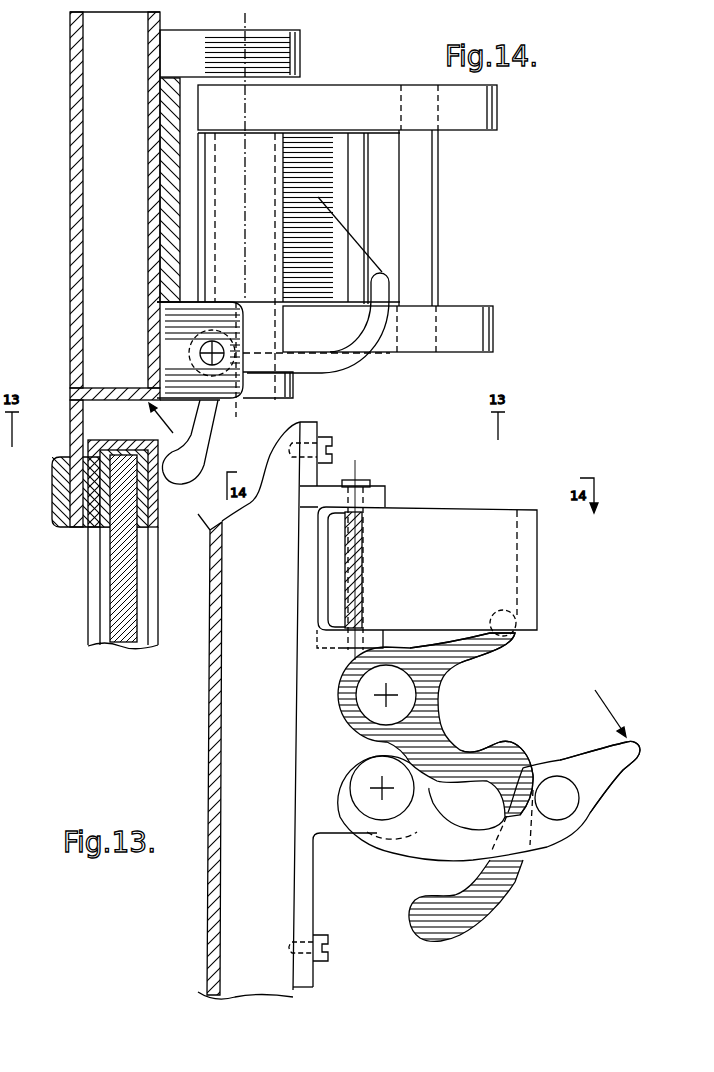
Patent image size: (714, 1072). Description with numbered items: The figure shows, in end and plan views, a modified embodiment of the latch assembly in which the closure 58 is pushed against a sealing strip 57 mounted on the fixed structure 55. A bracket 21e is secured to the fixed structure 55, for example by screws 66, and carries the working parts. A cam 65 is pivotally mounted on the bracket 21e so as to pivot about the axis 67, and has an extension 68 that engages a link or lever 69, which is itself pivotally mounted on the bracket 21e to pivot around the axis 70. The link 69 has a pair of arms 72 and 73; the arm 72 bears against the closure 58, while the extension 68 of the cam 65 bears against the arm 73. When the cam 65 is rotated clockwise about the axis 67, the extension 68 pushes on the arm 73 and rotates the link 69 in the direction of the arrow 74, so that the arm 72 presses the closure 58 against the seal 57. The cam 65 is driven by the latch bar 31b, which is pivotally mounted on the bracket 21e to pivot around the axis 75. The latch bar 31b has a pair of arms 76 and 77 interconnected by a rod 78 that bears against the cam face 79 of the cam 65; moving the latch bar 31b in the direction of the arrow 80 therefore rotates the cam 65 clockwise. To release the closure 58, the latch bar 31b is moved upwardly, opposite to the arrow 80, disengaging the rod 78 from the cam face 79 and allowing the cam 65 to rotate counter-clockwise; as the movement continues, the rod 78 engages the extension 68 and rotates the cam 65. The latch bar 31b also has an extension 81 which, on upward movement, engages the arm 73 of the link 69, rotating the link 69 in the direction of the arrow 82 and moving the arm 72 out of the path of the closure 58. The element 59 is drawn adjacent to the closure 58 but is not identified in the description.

In FIG. 14, the fixed structure 55 is at (70, 238).
In FIG. 13, the fixed structure 55 is at (283, 903).
In FIG. 14, the sealing strip 57 is at (63, 526).
In FIG. 14, the closure 58 is at (142, 587).
In FIG. 14, the bushing 59 is at (163, 493).
In FIG. 13, the cam 65 is at (502, 745).
In FIG. 13, the screws 66 is at (333, 443).
In FIG. 14, the axis 67 is at (240, 228).
In FIG. 13, the axis 67 is at (384, 697).
In FIG. 14, the extension 68 is at (376, 192).
In FIG. 13, the extension 68 is at (515, 643).
In FIG. 14, the link 69 is at (234, 402).
In FIG. 13, the link 69 is at (503, 522).
In FIG. 14, the axis 70 is at (204, 360).
In FIG. 13, the axis 70 is at (358, 468).
In FIG. 14, the arm 72 is at (197, 460).
In FIG. 14, the arm 73 is at (335, 365).
In FIG. 14, the arrow 74 is at (160, 428).
In FIG. 13, the axis 75 is at (380, 789).
In FIG. 14, the arm 76 is at (461, 352).
In FIG. 14, the arm 77 is at (499, 109).
In FIG. 14, the rod 78 is at (433, 230).
In FIG. 13, the cam face 79 is at (507, 887).
In FIG. 13, the arrow 80 is at (610, 712).
In FIG. 13, the extension 81 is at (617, 752).
In FIG. 14, the arrow 82 is at (335, 186).
In FIG. 13, the latch bar 31b is at (587, 822).
In FIG. 13, the bracket 21e is at (305, 869).